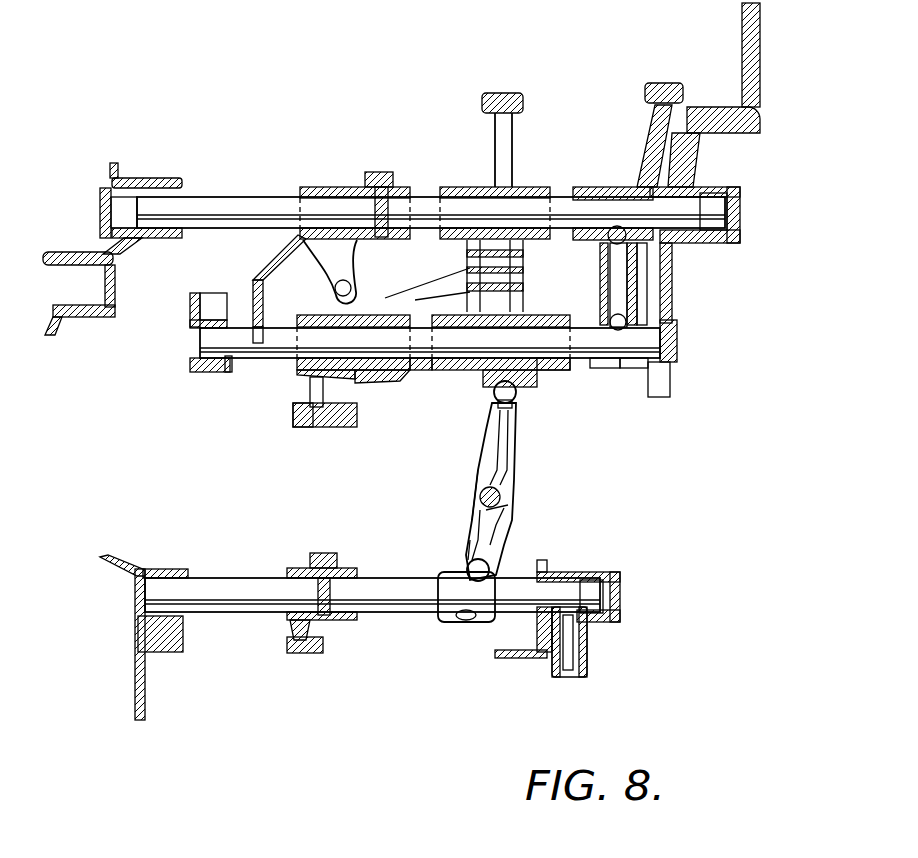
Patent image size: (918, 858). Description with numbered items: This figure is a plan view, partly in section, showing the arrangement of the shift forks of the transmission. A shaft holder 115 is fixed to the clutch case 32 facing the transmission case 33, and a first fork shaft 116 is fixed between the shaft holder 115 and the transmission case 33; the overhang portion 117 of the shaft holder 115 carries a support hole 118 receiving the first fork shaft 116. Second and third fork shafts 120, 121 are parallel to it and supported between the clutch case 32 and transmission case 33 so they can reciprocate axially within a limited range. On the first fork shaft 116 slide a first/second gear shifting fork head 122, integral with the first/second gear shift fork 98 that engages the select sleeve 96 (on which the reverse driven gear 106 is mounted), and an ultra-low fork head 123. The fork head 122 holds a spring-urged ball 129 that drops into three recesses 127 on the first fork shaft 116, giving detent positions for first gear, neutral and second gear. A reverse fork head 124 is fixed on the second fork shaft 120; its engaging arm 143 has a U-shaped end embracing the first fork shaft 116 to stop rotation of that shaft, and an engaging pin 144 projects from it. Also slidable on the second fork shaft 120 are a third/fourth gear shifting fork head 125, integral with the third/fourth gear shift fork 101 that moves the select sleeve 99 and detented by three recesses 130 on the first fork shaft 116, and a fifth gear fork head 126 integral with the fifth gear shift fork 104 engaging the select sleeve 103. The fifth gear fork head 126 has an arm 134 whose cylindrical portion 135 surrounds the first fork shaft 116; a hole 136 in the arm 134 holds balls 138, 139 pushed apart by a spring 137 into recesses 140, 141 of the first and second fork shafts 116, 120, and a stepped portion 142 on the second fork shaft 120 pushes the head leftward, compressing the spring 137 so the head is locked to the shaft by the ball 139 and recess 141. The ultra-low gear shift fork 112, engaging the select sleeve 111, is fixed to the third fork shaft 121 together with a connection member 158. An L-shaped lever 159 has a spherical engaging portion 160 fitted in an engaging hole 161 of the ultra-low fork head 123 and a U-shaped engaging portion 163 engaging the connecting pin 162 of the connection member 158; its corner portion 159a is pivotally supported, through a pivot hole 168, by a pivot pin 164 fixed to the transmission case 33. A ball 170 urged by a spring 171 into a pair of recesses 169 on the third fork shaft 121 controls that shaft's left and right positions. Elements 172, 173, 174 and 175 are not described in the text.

The clutch case 32 is at (100, 236).
The transmission case 33 is at (705, 128).
The select sleeve 96 is at (294, 420).
The first/second gear shift fork 98 is at (316, 408).
The select sleeve 99 is at (483, 103).
The third/fourth gear shift fork 101 is at (495, 137).
The select sleeve 103 is at (681, 91).
The fifth gear shift fork 104 is at (656, 129).
The driven gear 106 is at (355, 412).
The select sleeve 111 is at (323, 646).
The ultra-low gear shift fork 112 is at (293, 623).
The shaft holder 115 is at (190, 313).
The first fork shaft 116 is at (416, 370).
The overhang portion 117 is at (200, 373).
The support hole 118 is at (230, 373).
The second fork shaft 120 is at (213, 206).
The third fork shaft 121 is at (215, 606).
The first/second gear shifting fork head 122 is at (310, 318).
The ultra-low fork head 123 is at (540, 372).
The reverse fork head 124 is at (322, 182).
The third/fourth gear shifting fork head 125 is at (516, 187).
The fifth gear fork head 126 is at (595, 188).
The recesses 127 is at (300, 373).
The ball 129 is at (350, 380).
The recesses 130 is at (527, 311).
The arm 134 is at (645, 284).
The cylindrical portion 135 is at (600, 369).
The hole 136 is at (640, 263).
The spring 137 is at (645, 303).
The ball 138 is at (625, 381).
The ball 139 is at (618, 227).
The recess 140 is at (609, 317).
The recess 141 is at (604, 258).
The stepped portion 142 is at (688, 160).
The engaging arm 143 is at (256, 273).
The engaging pin 144 is at (335, 287).
The connection member 158 is at (446, 621).
The lever 159 is at (506, 531).
The corner portion 159a is at (507, 506).
The spherical engaging portion 160 is at (494, 394).
The engaging hole 161 is at (512, 404).
The connecting pin 162 is at (470, 571).
The U-shaped engaging portion 163 is at (468, 551).
The pivot pin 164 is at (501, 494).
The pivot hole 168 is at (480, 494).
The recesses 169 is at (540, 630).
The ball 170 is at (566, 600).
The spring 171 is at (587, 646).
The shaft 172 is at (430, 343).
The wire 173 is at (466, 296).
The wire 174 is at (440, 276).
The spring 175 is at (523, 255).